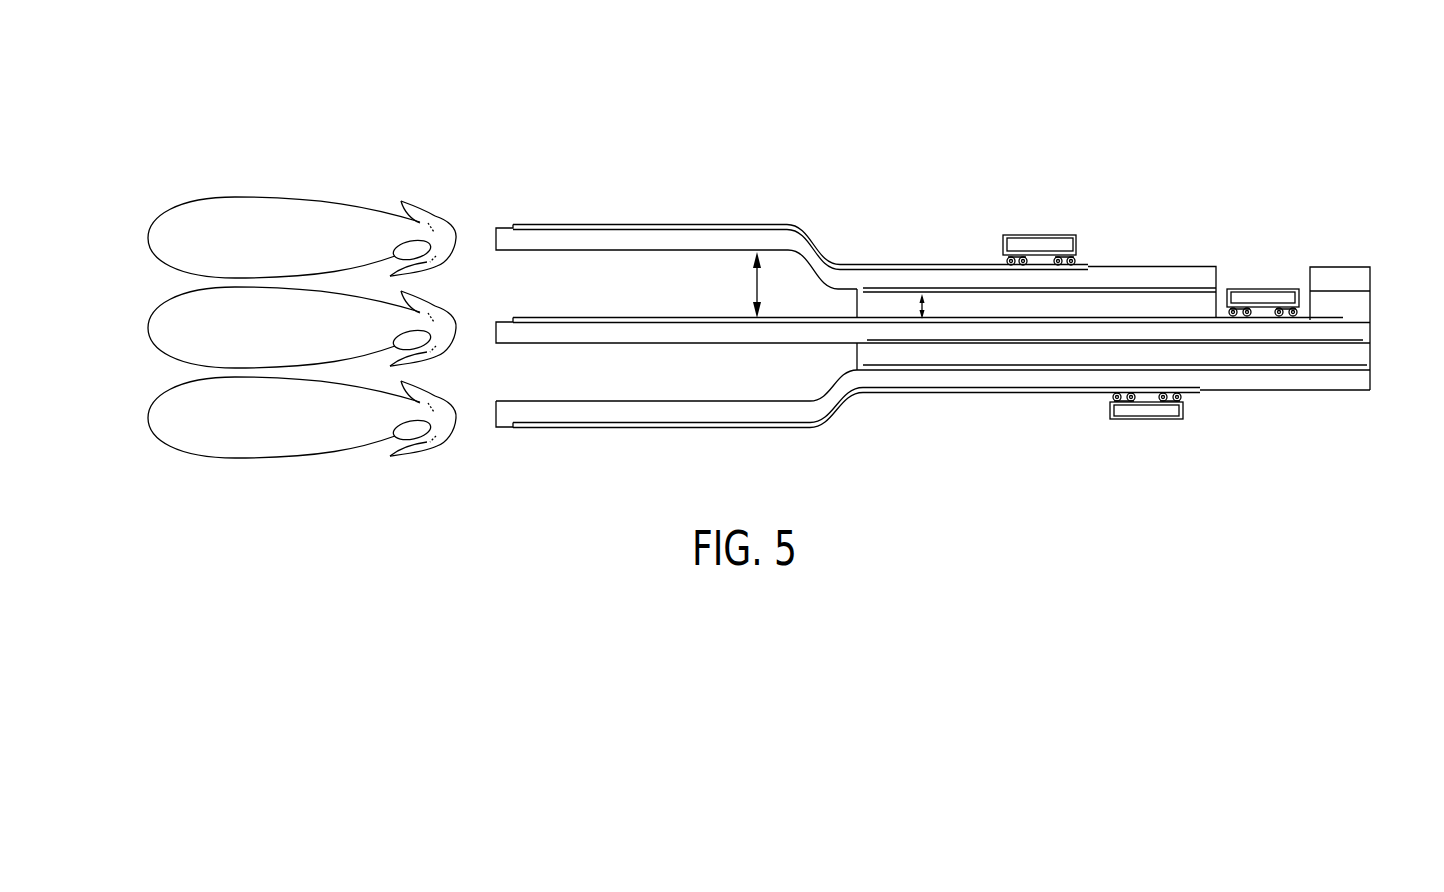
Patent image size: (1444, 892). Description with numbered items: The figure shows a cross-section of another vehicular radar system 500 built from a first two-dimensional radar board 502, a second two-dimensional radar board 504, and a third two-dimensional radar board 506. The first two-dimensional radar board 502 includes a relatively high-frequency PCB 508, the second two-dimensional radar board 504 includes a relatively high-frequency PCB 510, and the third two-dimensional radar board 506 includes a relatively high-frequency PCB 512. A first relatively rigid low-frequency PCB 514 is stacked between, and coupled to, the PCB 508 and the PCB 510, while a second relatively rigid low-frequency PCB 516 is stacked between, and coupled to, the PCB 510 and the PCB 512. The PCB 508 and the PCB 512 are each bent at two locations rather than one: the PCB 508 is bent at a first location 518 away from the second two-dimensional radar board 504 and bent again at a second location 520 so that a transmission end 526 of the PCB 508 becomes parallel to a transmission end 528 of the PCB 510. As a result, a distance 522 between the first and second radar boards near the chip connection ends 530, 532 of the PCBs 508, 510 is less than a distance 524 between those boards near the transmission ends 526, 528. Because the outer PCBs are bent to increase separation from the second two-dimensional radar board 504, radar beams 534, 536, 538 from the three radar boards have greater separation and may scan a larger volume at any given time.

The vehicular radar system 500 is at (412, 98).
The first two-dimensional radar board 502 is at (552, 222).
The second two-dimensional radar board 504 is at (552, 316).
The third two-dimensional radar board 506 is at (538, 414).
The relatively high-frequency PCB 508 is at (703, 242).
The relatively high-frequency PCB 510 is at (703, 334).
The relatively high-frequency PCB 512 is at (703, 413).
The first relatively rigid low-frequency PCB 514 is at (1197, 303).
The second relatively rigid low-frequency PCB 516 is at (1263, 358).
The first location 518 is at (843, 262).
The second location 520 is at (797, 225).
The distance 522 is at (927, 305).
The distance 524 is at (762, 283).
The transmission end 526 is at (494, 232).
The transmission end 528 is at (494, 325).
The chip connection end 530 is at (1362, 278).
The chip connection end 532 is at (1360, 330).
The radar beam 534 is at (148, 240).
The radar beam 536 is at (148, 330).
The radar beam 538 is at (148, 420).